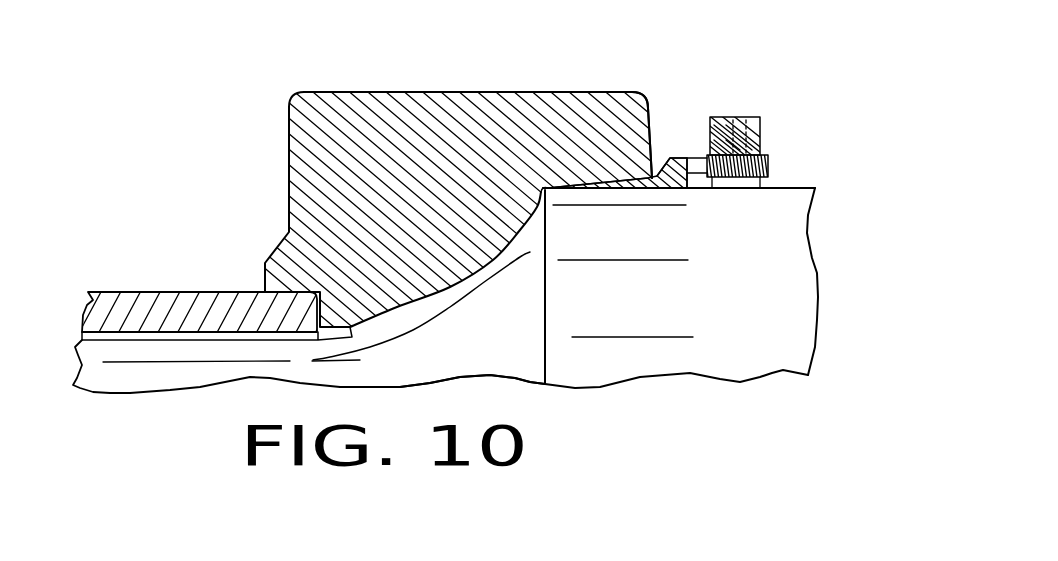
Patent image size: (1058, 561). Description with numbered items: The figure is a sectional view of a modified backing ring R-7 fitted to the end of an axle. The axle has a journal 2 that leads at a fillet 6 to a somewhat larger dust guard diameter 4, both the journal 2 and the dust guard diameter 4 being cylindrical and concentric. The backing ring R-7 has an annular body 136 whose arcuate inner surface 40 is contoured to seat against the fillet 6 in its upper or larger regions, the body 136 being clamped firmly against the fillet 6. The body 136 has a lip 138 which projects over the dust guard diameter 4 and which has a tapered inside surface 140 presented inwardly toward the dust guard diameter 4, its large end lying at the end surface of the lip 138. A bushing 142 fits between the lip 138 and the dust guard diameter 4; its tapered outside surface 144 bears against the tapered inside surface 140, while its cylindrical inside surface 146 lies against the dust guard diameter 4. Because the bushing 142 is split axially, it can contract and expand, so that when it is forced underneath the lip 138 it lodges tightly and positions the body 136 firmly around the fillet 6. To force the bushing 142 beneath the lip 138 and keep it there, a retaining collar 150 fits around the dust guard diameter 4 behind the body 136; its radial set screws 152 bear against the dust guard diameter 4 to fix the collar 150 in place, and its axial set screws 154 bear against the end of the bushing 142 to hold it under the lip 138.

The journal 2 is at (130, 382).
The dust guard diameter 4 is at (769, 352).
The fillet 6 is at (520, 357).
The arcuate inner surface 40 is at (496, 253).
The annular body 136 is at (366, 115).
The lip 138 is at (563, 108).
The tapered inside surface 140 is at (612, 190).
The bushing 142 is at (657, 176).
The tapered outside surface 144 is at (621, 180).
The cylindrical inside surface 146 is at (653, 193).
The retaining collar 150 is at (762, 137).
The radial set screws 152 is at (738, 116).
The axial set screws 154 is at (768, 167).
The backing ring R-7 is at (741, 60).